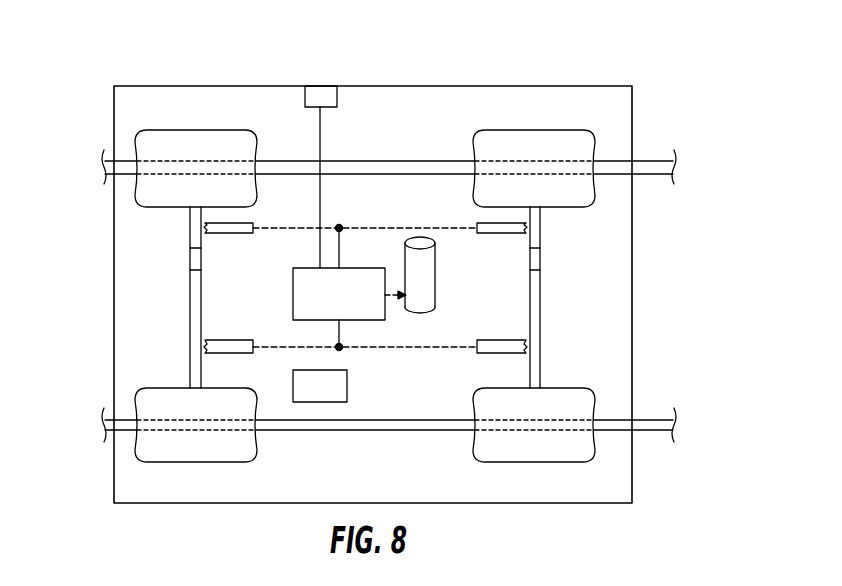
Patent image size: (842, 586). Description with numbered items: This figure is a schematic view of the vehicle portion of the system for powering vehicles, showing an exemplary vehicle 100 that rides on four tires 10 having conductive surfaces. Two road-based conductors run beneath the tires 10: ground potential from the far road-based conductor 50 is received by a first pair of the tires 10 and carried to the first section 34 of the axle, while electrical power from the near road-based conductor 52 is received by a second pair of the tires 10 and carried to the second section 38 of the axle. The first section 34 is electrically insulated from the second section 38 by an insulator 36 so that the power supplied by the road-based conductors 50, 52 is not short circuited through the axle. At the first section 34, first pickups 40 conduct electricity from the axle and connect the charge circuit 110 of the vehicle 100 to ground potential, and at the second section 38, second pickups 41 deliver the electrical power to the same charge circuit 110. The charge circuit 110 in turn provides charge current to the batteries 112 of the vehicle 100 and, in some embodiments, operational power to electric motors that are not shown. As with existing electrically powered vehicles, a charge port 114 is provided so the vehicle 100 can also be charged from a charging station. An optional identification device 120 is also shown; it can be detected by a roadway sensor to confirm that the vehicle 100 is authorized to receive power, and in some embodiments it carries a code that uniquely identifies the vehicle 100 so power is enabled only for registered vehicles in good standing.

The tire 10 is at (193, 104).
The vehicle 100 is at (535, 86).
The far road-based conductor 50 is at (660, 160).
The near road-based conductor 52 is at (645, 430).
The first section of the axle 34 is at (190, 220).
The insulator 36 is at (190, 259).
The second section of the axle 38 is at (190, 290).
The first pickup 40 is at (208, 234).
The second pickup 41 is at (212, 340).
The charge circuit 110 is at (292, 283).
The batteries 112 is at (404, 258).
The charge port 114 is at (323, 97).
The identification device 120 is at (347, 385).